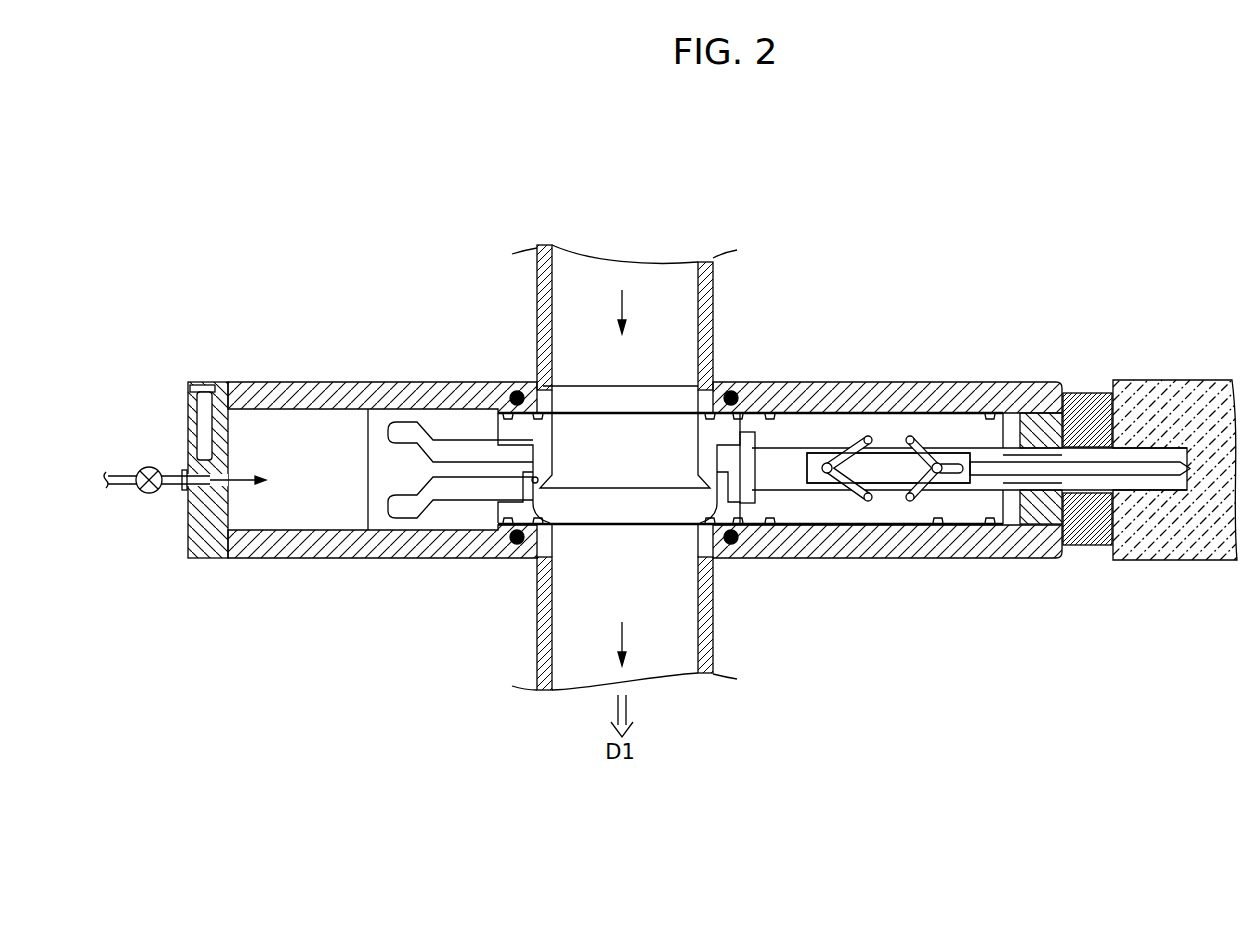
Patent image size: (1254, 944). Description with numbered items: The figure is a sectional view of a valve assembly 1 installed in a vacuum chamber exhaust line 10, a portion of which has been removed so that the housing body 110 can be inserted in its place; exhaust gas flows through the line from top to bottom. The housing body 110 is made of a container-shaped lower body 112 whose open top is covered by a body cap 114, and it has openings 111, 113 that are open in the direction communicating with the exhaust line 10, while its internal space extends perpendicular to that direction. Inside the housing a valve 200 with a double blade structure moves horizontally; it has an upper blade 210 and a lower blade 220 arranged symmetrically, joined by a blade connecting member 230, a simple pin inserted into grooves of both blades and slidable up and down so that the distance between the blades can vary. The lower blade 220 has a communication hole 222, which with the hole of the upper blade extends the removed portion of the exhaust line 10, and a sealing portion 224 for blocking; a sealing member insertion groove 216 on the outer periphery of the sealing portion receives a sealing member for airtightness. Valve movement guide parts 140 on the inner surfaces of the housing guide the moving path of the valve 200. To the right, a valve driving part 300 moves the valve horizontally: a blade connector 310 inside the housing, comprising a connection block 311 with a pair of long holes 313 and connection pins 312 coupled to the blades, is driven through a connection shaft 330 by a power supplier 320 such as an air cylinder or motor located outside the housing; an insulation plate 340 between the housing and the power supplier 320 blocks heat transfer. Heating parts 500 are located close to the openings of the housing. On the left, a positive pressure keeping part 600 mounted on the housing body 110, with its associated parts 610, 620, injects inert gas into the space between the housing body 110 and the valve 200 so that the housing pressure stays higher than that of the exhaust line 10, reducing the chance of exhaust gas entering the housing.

The valve assembly 1 is at (698, 447).
The vacuum chamber exhaust line 10 is at (540, 332).
The housing body 110 is at (611, 420).
The opening 111 is at (603, 535).
The lower body 112 is at (188, 462).
The opening 113 is at (603, 406).
The body cap 114 is at (262, 392).
The valve movement guide parts 140 is at (372, 418).
The valve 200 is at (842, 506).
The upper blade 210 is at (842, 512).
The sealing member insertion groove 216 is at (772, 416).
The lower blade 220 is at (888, 527).
The communication hole 222 is at (636, 506).
The sealing portion 224 is at (937, 524).
The blade connecting member 230 is at (748, 478).
The valve driving part 300 is at (1022, 366).
The blade connector 310 is at (930, 359).
The connection block 311 is at (948, 458).
The connection pins 312 is at (922, 452).
The long holes 313 is at (843, 455).
The power supplier 320 is at (1175, 389).
The connection shaft 330 is at (1062, 445).
The insulation plate 340 is at (1090, 420).
The heating parts 500 is at (500, 382).
The positive pressure keeping part 600 is at (183, 558).
The supply pipe 610 is at (178, 487).
The valve 620 is at (143, 495).